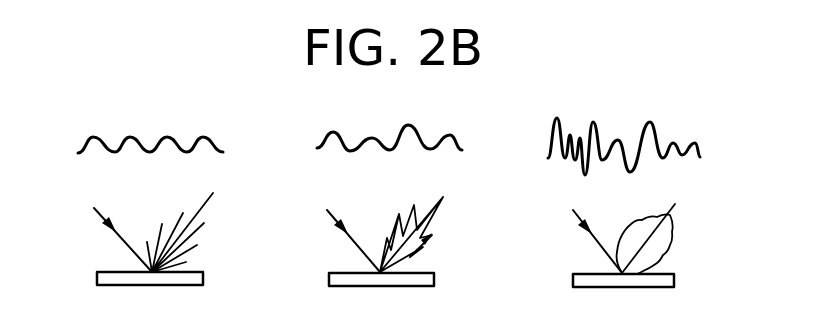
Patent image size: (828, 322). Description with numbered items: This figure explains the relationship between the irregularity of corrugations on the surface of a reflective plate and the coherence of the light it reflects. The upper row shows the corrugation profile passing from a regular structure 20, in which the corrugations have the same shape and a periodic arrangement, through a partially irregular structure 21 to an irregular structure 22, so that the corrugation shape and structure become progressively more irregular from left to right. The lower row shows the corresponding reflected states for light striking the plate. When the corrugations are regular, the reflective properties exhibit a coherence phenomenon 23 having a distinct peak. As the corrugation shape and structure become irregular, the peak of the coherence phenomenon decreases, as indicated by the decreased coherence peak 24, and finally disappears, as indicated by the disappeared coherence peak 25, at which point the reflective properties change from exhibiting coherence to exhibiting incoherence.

The regular corrugation structure 20 is at (204, 137).
The partially irregular corrugation structure 21 is at (450, 134).
The irregular corrugation structure 22 is at (657, 130).
The coherence phenomenon having a peak 23 is at (192, 248).
The decreased coherence peak 24 is at (427, 240).
The disappeared coherence peak 25 is at (672, 247).